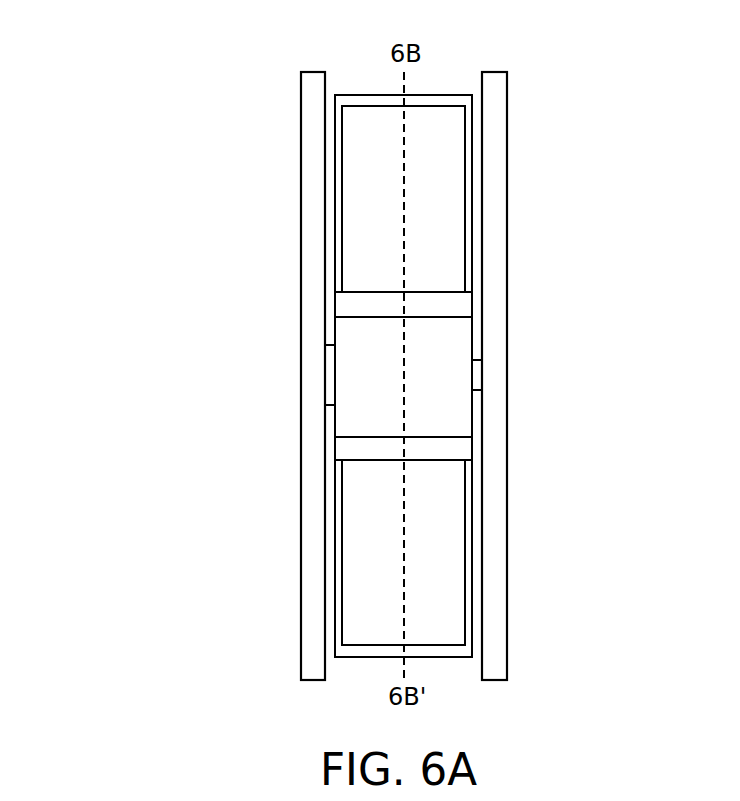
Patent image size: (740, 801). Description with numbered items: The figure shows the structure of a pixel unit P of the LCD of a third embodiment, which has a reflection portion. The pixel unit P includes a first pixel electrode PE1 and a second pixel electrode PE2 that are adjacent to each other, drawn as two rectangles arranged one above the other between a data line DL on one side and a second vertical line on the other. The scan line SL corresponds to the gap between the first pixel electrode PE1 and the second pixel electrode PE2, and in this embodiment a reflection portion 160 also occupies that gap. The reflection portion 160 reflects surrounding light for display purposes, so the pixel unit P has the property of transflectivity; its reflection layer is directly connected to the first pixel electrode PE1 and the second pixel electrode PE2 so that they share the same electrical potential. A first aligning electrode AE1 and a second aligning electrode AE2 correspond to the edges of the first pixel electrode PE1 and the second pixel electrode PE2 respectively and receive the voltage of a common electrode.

The pixel unit P is at (226, 50).
The data line DL is at (301, 101).
The first aligning electrode AE1 is at (470, 100).
The first pixel electrode PE1 is at (358, 207).
The reflection portion 160 is at (352, 374).
The scan line SL is at (476, 379).
The second pixel electrode PE2 is at (358, 544).
The second aligning electrode AE2 is at (470, 649).